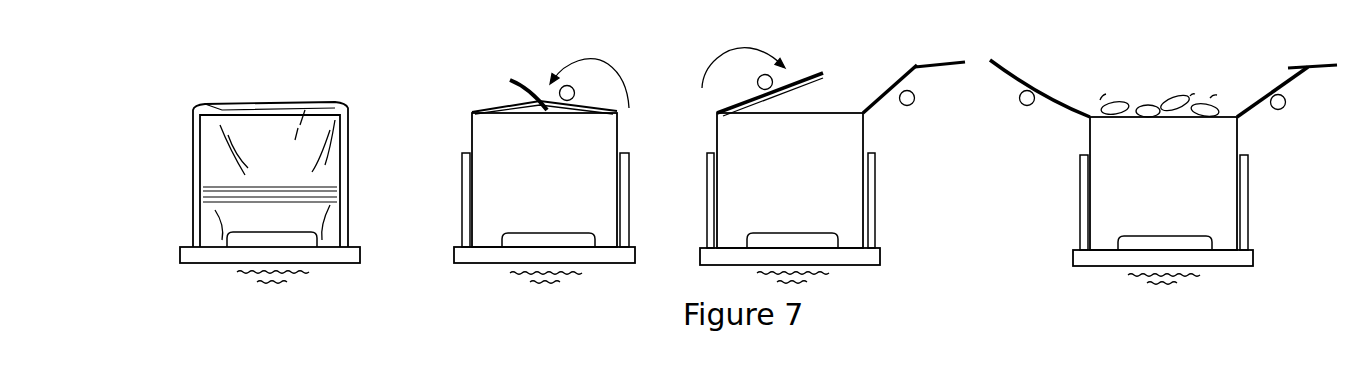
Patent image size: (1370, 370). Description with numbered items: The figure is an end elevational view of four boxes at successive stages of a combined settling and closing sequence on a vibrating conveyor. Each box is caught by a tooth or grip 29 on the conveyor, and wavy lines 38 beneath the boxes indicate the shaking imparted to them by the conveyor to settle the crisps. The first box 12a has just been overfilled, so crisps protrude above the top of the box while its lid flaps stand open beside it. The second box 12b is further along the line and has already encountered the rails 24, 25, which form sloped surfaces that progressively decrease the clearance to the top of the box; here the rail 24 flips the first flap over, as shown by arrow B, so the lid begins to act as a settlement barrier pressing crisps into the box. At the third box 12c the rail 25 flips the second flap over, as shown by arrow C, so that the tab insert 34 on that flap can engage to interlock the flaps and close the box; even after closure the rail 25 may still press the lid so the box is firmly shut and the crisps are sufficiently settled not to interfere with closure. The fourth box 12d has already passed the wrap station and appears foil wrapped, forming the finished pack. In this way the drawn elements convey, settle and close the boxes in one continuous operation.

The first box 12a is at (1190, 197).
The second box 12b is at (810, 180).
The third box 12c is at (575, 180).
The fourth box 12d is at (297, 176).
The rail 24 is at (757, 84).
The rail 25 is at (575, 95).
The tooth or grip 29 is at (305, 237).
The tab insert 34 is at (1297, 68).
The wavy lines 38 is at (567, 276).
The arrow B is at (735, 48).
The arrow C is at (604, 60).